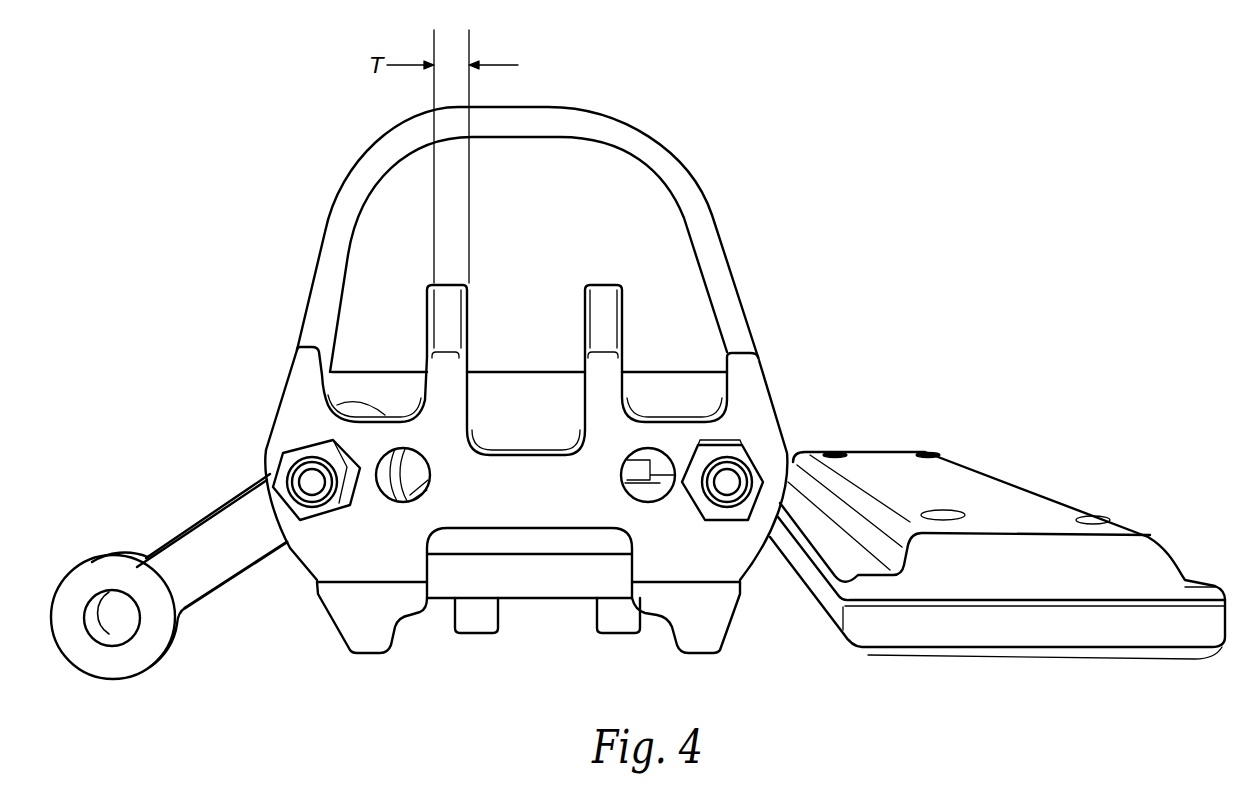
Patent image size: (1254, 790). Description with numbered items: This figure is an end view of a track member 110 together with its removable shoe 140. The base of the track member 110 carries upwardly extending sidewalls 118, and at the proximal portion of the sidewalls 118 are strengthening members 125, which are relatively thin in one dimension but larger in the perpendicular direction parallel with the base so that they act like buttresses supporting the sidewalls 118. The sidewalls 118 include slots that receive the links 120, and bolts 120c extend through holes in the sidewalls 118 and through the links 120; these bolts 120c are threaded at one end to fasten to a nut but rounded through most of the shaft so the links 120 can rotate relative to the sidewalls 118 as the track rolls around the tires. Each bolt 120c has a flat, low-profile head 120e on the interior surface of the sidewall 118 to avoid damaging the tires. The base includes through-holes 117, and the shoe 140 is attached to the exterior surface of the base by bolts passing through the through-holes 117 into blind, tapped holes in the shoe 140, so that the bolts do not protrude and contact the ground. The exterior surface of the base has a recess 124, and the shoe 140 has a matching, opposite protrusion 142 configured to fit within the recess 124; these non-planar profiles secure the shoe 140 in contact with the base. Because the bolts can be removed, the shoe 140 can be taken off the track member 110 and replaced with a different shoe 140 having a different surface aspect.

The track member 110 is at (757, 60).
The sidewalls 118 is at (622, 132).
The strengthening members 125 is at (318, 340).
The links 120 is at (449, 516).
The flat, low-profile head 120e is at (743, 380).
The bolts 120c is at (727, 477).
The recess 124 is at (415, 648).
The through-holes 117 is at (1090, 518).
The protrusion 142 is at (972, 580).
The shoe 140 is at (997, 558).